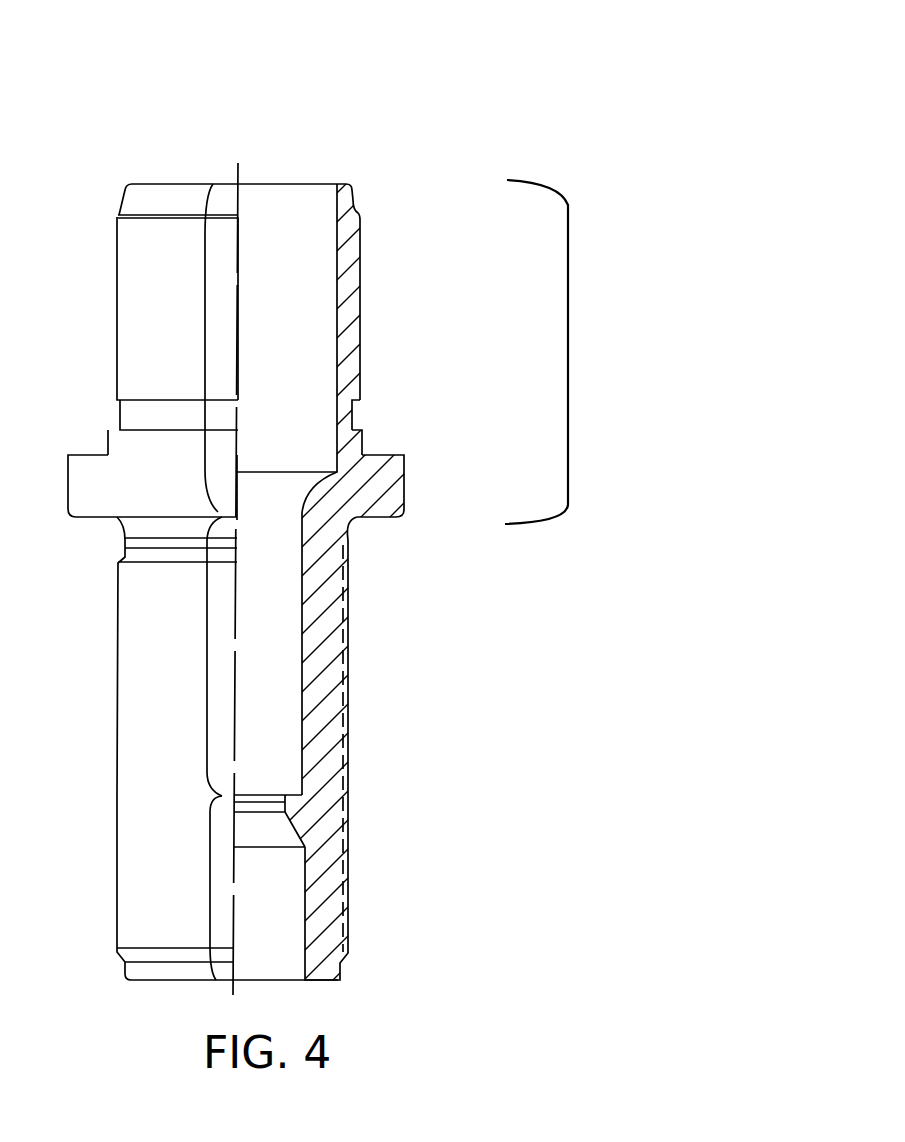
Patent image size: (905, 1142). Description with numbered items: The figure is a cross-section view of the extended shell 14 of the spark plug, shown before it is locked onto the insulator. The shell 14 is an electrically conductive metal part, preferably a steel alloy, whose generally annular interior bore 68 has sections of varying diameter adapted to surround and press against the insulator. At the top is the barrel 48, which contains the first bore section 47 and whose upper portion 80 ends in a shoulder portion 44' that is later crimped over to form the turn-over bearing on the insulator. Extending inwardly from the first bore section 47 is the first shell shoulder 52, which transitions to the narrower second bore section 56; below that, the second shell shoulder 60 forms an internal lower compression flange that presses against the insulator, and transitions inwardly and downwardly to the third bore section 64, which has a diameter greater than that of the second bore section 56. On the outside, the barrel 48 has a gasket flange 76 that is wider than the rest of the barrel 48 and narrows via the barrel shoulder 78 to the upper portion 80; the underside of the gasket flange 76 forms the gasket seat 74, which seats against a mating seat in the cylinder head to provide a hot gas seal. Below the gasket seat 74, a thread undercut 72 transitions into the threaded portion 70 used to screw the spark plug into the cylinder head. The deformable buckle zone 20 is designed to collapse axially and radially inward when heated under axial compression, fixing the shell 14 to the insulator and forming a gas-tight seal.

The extended shell 14 is at (363, 98).
The deformable buckle zone 20 is at (352, 419).
The shoulder portion 44' is at (412, 177).
The first bore section 47 is at (201, 300).
The barrel 48 is at (569, 330).
The first shell shoulder 52 is at (318, 490).
The second bore section 56 is at (203, 642).
The second shell shoulder 60 is at (282, 795).
The third bore section 64 is at (203, 865).
The annular bore 68 is at (265, 222).
The threaded portion 70 is at (350, 692).
The thread undercut 72 is at (347, 540).
The gasket seat 74 is at (368, 516).
The gasket flange 76 is at (405, 486).
The barrel shoulder 78 is at (387, 453).
The upper portion 80 is at (360, 294).